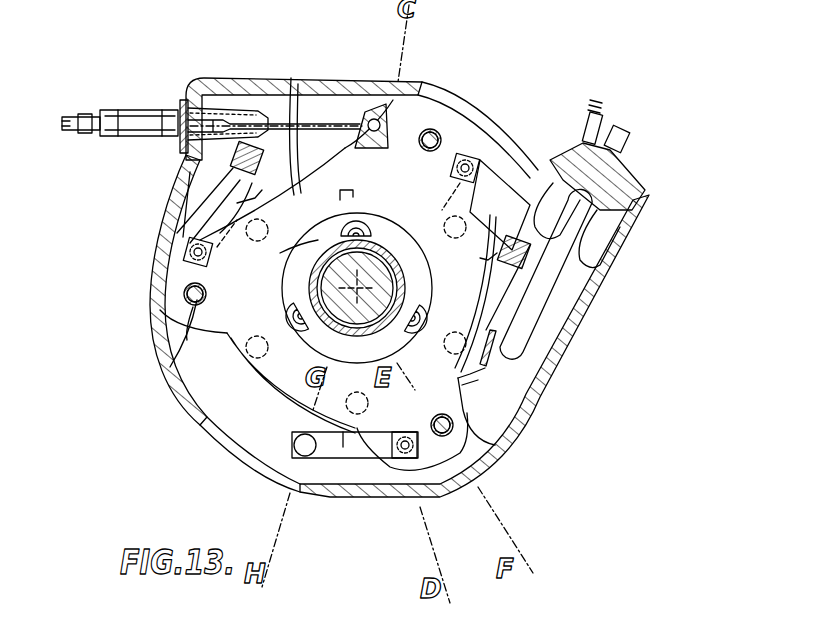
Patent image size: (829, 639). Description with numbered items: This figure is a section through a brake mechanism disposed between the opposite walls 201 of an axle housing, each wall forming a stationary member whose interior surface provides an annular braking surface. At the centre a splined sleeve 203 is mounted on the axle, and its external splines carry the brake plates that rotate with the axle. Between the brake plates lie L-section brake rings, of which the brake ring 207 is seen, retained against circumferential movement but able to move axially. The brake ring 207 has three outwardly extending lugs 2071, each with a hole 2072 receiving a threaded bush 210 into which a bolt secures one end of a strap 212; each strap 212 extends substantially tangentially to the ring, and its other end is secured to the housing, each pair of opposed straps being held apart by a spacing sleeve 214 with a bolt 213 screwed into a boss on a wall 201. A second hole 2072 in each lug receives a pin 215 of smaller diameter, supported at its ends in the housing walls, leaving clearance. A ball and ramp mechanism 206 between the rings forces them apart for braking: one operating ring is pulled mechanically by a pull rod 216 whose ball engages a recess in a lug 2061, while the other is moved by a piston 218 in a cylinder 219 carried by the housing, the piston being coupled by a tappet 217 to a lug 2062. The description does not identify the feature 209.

The wall of axle housing 201 is at (252, 84).
The sleeve 203 is at (368, 275).
The ball and ramp mechanism 206 is at (278, 403).
The lug of operating ring 2061 is at (403, 96).
The lug of operating ring 2062 is at (517, 358).
The brake ring 207 is at (290, 100).
The lug 2071 is at (423, 120).
The hole in lug 2072 is at (440, 133).
The mounting holes 209 is at (410, 327).
The bush 210 is at (187, 260).
The strap 212 is at (217, 210).
The bolt 213 is at (235, 160).
The spacing sleeve 214 is at (233, 190).
The pin 215 is at (185, 300).
The pull rod 216 is at (318, 122).
The tappet 217 is at (537, 293).
The piston 218 is at (633, 213).
The cylinder 219 is at (630, 180).